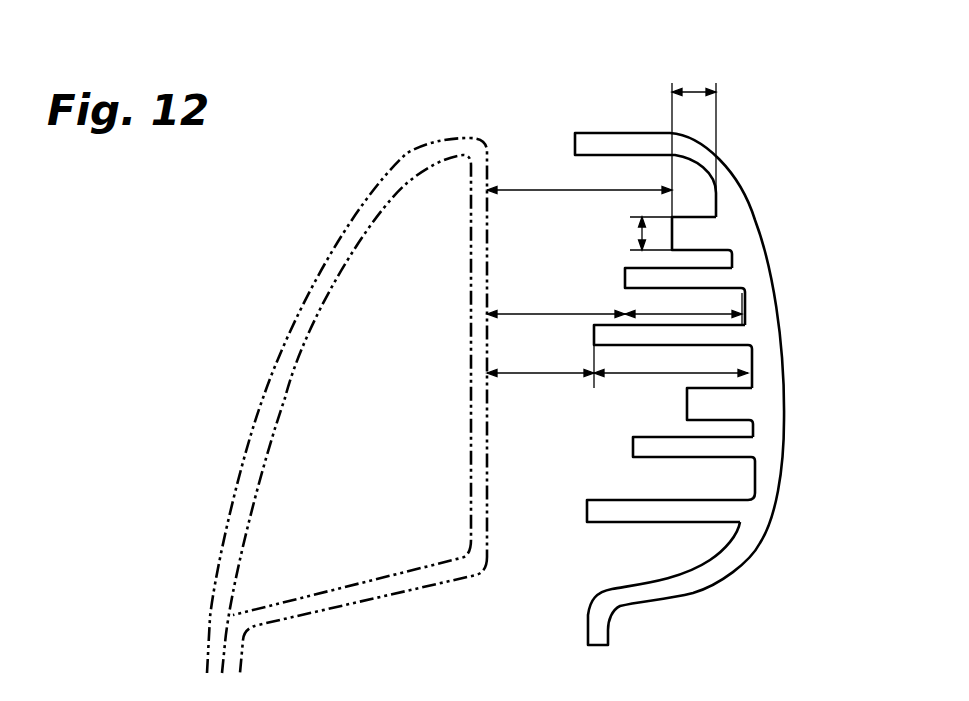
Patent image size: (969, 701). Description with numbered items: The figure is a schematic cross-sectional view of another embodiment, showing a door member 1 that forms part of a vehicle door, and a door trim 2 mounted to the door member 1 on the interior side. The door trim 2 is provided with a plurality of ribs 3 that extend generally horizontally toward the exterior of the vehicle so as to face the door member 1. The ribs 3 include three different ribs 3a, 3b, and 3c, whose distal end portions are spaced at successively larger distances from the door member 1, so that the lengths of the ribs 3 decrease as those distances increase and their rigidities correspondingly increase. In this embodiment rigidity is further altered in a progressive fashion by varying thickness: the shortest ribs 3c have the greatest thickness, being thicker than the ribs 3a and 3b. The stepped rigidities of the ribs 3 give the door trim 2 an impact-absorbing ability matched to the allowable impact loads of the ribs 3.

The door member 1 is at (407, 153).
The door trim 2 is at (615, 132).
The ribs 3 is at (748, 362).
The rib 3a is at (737, 337).
The rib 3b is at (720, 280).
The rib 3c is at (703, 237).